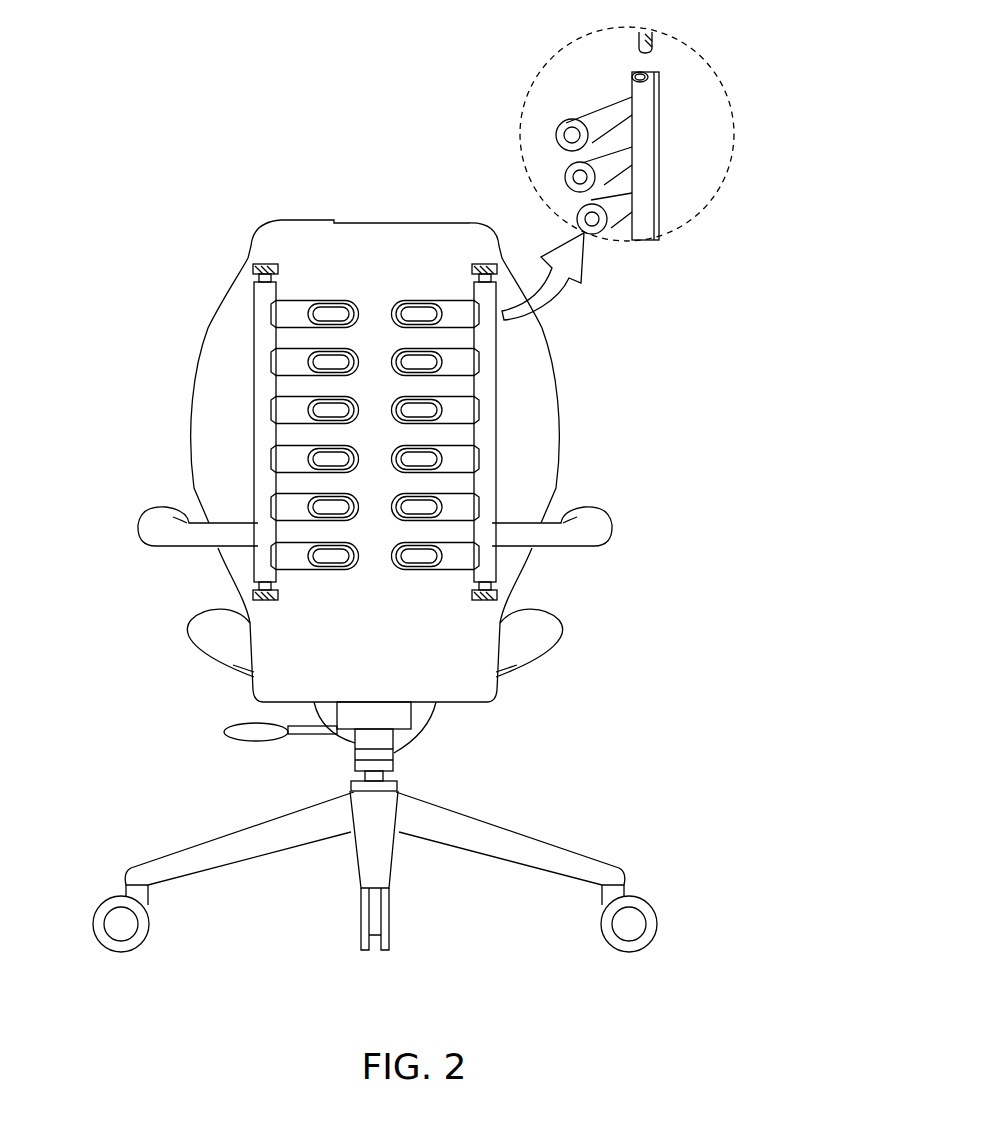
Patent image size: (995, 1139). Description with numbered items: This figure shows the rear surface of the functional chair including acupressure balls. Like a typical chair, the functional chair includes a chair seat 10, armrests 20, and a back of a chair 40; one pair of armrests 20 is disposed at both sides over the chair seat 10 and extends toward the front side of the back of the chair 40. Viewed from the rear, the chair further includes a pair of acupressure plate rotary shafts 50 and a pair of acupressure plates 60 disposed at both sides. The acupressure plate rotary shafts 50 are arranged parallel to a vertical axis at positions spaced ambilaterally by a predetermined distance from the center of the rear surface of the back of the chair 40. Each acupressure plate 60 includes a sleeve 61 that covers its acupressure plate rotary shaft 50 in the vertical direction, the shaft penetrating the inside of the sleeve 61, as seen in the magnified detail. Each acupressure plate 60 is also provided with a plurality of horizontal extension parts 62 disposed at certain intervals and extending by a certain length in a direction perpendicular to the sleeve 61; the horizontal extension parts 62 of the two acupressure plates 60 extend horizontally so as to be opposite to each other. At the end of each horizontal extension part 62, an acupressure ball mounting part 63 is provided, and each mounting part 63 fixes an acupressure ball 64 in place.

The chair seat 10 is at (566, 627).
The armrests 20 is at (172, 510).
The back of a chair 40 is at (333, 216).
The acupressure plate rotary shaft 50 is at (267, 258).
The acupressure plate 60 is at (256, 387).
The sleeve 61 is at (663, 73).
The horizontal extension parts 62 is at (622, 100).
The acupressure ball mounting part 63 is at (570, 118).
The acupressure ball 64 is at (558, 148).